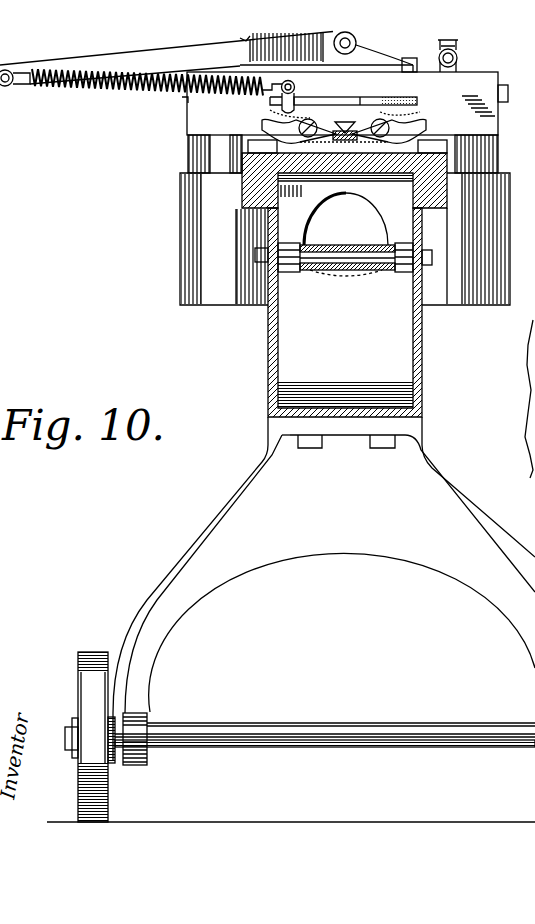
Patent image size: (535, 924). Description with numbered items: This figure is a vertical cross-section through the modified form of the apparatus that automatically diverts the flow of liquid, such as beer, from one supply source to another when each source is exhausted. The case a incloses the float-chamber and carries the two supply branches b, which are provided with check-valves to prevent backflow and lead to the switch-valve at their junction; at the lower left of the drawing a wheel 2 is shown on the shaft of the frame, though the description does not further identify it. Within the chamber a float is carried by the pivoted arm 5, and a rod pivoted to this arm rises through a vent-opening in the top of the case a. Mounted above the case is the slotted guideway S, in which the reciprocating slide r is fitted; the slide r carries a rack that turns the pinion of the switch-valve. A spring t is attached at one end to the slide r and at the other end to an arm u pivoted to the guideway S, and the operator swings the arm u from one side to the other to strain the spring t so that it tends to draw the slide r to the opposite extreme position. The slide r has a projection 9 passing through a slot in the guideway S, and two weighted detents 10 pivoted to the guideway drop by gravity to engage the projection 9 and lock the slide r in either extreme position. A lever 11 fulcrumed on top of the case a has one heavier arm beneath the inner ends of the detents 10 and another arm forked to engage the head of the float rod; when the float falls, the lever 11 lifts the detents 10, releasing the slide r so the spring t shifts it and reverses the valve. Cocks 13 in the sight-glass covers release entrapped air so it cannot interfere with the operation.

The gear wheel 2 is at (93, 652).
The pivoted arm 5 is at (318, 272).
The projection 9 is at (270, 104).
The detents 10 is at (262, 126).
The lever 11 is at (345, 122).
The cocks 13 is at (462, 52).
The slide r is at (318, 107).
The guideway S is at (345, 103).
The case a is at (343, 276).
The supply branches b is at (233, 304).
The spring t is at (88, 90).
The arm u is at (208, 57).